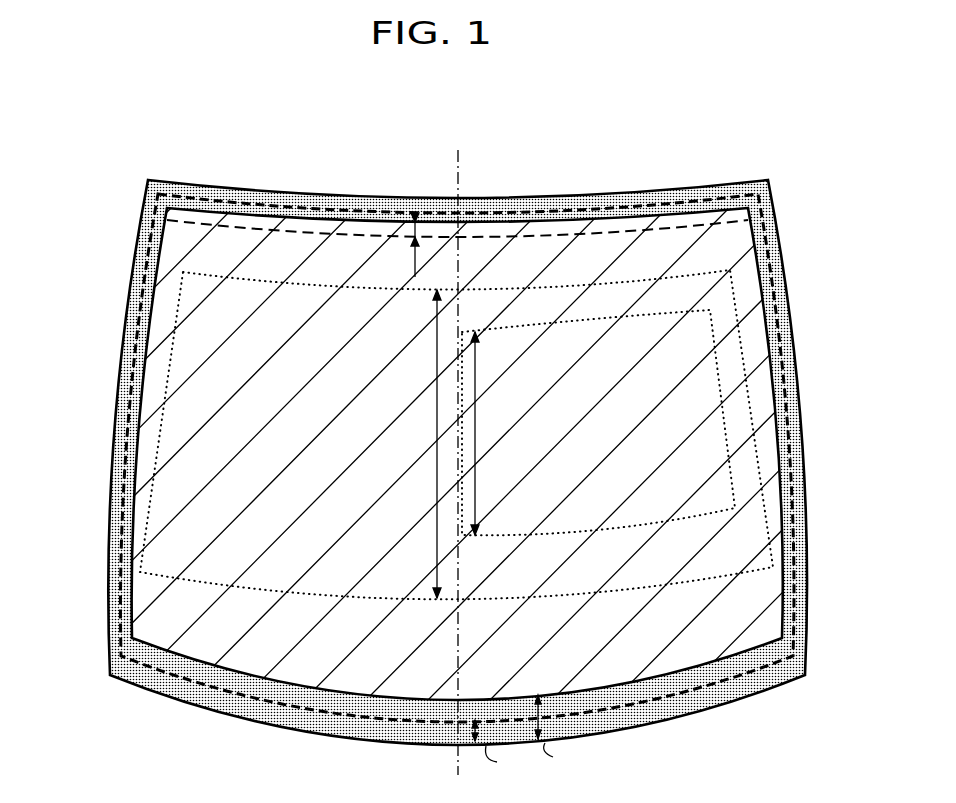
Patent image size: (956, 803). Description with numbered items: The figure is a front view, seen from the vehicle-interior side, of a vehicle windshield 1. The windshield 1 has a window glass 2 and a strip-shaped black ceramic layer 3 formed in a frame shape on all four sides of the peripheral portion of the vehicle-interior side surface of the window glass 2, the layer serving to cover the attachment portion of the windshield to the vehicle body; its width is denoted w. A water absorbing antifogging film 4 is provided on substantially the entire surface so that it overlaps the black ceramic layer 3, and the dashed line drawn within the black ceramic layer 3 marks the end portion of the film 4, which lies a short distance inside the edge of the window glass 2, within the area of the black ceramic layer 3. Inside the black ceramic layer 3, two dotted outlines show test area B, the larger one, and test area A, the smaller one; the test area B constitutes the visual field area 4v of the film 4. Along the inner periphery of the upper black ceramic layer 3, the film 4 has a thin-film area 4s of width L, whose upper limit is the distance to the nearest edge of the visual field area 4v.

The vehicle windshield 1 is at (141, 126).
The window glass 2 is at (383, 746).
The black ceramic layer 3 is at (124, 427).
The water absorbing antifogging film 4 is at (582, 676).
The thin-film area 4s is at (380, 232).
The visual field area 4v is at (178, 380).